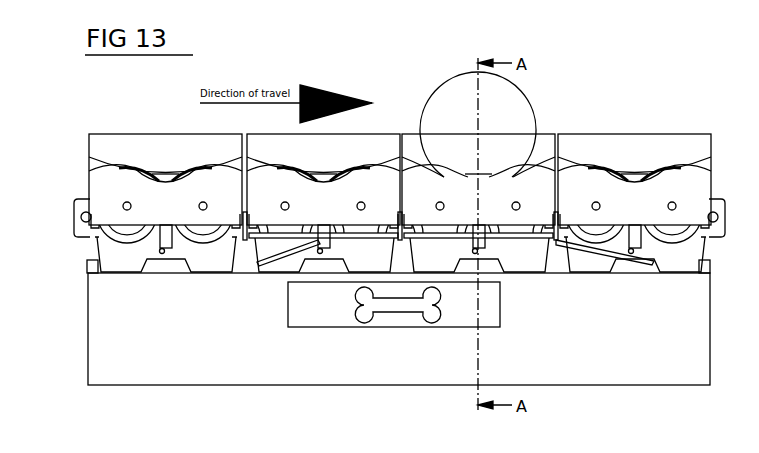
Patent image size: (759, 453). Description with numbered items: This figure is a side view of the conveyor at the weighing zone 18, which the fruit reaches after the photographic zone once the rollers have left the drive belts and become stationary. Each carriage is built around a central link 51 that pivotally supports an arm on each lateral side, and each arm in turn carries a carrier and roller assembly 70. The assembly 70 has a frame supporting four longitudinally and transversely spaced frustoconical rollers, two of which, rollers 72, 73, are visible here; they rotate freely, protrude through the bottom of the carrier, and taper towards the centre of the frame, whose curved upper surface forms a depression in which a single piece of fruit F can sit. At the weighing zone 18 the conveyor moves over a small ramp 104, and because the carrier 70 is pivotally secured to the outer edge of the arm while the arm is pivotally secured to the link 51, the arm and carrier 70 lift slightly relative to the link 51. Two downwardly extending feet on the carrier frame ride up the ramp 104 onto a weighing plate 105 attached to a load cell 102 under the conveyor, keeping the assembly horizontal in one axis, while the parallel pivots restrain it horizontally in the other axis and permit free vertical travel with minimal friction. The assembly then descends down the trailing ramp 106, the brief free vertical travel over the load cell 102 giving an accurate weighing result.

The weighing zone 18 is at (594, 84).
The central link 51 is at (628, 131).
The carrier and roller assembly 70 is at (92, 176).
The frustoconical roller 72 is at (123, 144).
The frustoconical roller 73 is at (173, 144).
The conveyed article (ball) F is at (532, 100).
The load cell 102 is at (336, 322).
The ramp 104 is at (265, 264).
The weighing plate 105 is at (505, 240).
The trailing ramp 106 is at (653, 264).